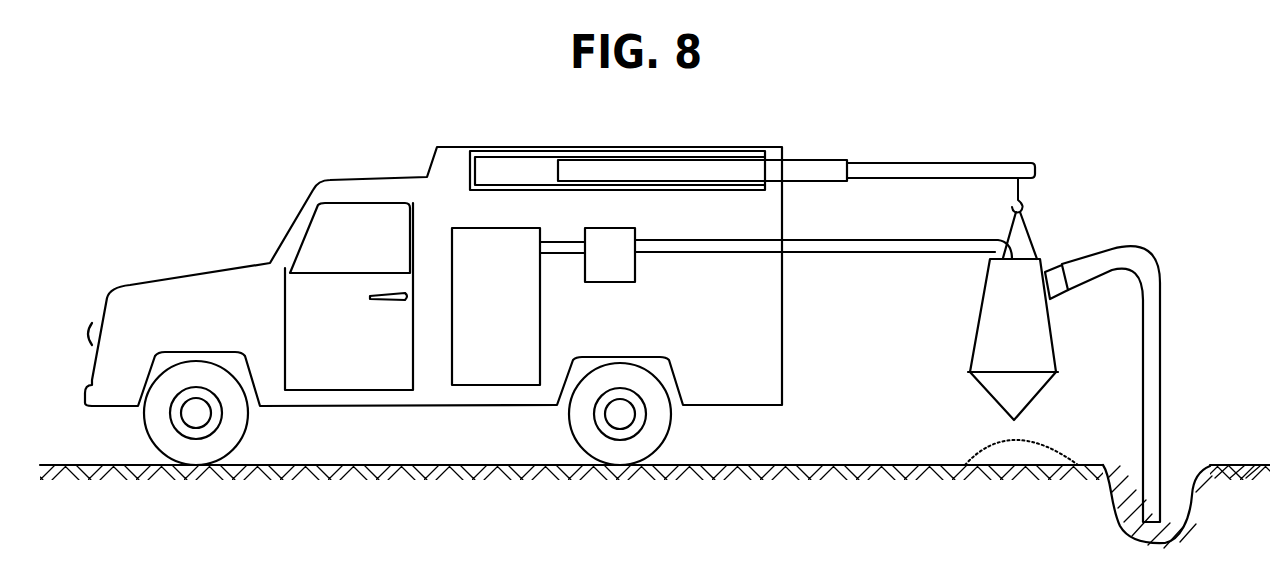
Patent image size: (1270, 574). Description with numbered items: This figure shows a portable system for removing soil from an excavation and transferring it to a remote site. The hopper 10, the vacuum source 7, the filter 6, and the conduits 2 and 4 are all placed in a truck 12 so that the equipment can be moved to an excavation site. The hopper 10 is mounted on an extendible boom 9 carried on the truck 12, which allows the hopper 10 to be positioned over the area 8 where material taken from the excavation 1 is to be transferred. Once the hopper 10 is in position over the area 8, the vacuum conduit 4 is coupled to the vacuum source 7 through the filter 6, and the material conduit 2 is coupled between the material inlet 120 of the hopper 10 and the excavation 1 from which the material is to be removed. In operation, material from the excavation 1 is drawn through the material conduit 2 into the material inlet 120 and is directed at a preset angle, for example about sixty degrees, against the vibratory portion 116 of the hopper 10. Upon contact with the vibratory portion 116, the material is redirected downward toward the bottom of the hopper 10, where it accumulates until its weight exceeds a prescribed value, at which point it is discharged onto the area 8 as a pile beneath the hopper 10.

The excavation 1 is at (1192, 465).
The material conduit 2 is at (1162, 323).
The vacuum conduit 4 is at (867, 253).
The filter 6 is at (622, 282).
The vacuum source 7 is at (467, 227).
The area 8 is at (1045, 440).
The extendible boom 9 is at (870, 162).
The hopper 10 is at (1052, 330).
The truck 12 is at (727, 145).
The vibratory portion 116 is at (982, 290).
The material inlet 120 is at (1055, 270).